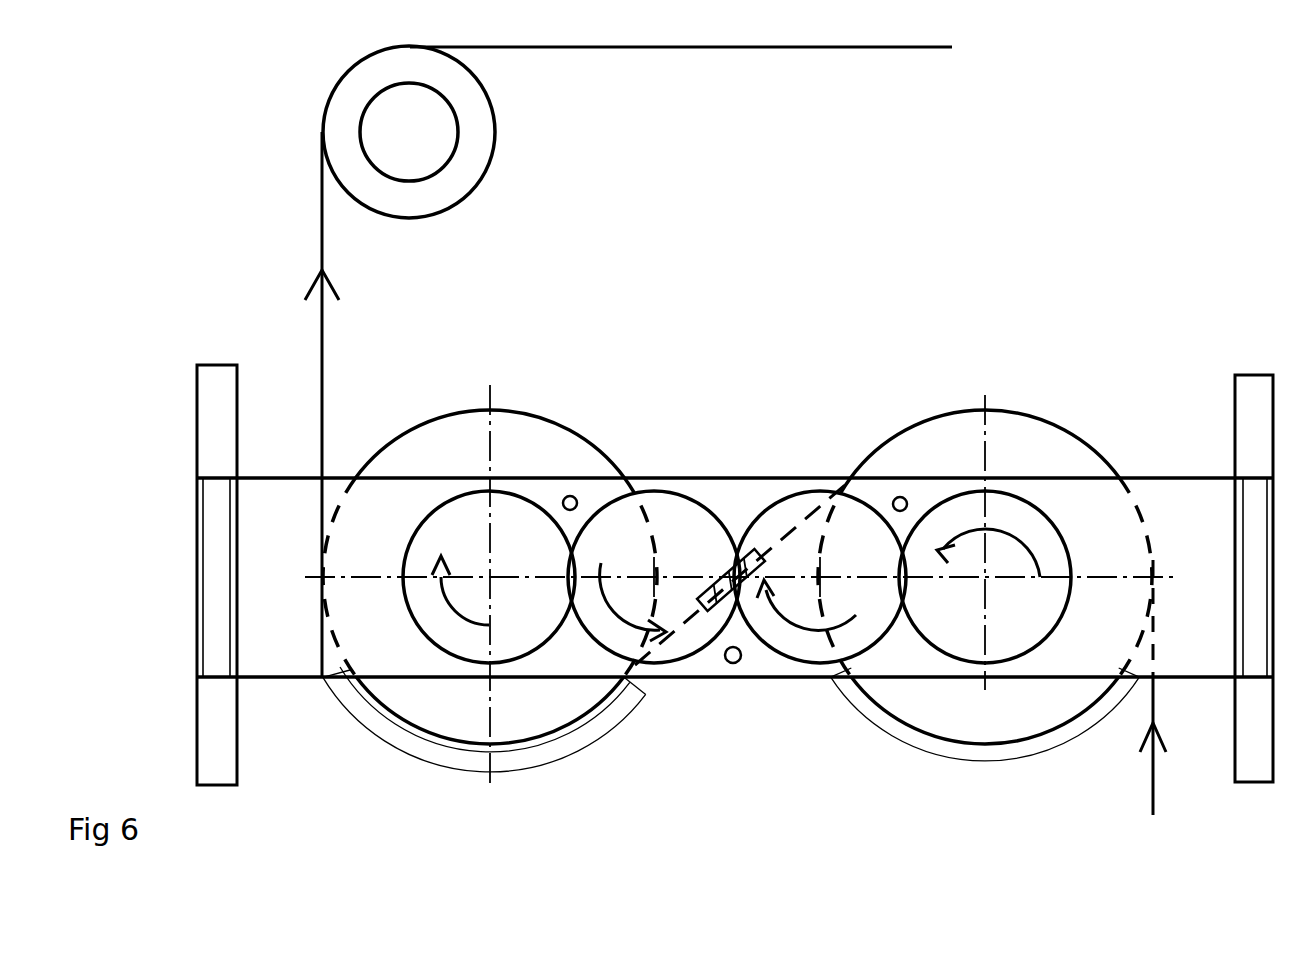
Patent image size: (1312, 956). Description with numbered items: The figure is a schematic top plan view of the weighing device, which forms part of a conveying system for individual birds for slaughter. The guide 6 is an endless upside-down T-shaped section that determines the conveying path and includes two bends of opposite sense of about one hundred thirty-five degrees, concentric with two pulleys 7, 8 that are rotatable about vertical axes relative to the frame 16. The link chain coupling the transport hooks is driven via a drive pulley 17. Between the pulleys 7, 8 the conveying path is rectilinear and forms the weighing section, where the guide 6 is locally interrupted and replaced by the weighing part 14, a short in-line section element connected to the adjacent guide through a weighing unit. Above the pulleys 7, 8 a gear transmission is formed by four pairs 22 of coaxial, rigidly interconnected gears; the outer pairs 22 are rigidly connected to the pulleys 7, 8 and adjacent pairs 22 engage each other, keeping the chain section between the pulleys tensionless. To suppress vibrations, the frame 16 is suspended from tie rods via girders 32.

The guide 6 is at (850, 48).
The drive pulley 17 is at (490, 134).
The girders 32 is at (213, 395).
The pulley 8 is at (566, 432).
The pulley 7 is at (1017, 436).
The frame 16 is at (372, 725).
The weighing part 14 is at (720, 568).
The pairs of gears 22 is at (470, 645).